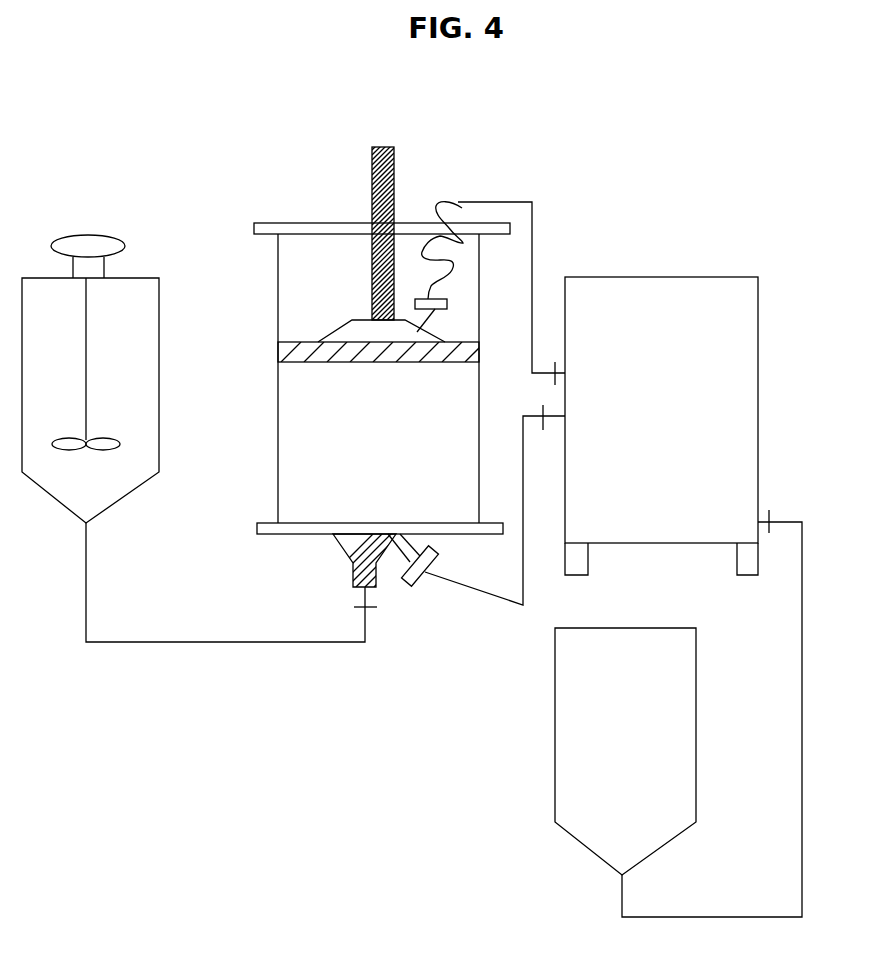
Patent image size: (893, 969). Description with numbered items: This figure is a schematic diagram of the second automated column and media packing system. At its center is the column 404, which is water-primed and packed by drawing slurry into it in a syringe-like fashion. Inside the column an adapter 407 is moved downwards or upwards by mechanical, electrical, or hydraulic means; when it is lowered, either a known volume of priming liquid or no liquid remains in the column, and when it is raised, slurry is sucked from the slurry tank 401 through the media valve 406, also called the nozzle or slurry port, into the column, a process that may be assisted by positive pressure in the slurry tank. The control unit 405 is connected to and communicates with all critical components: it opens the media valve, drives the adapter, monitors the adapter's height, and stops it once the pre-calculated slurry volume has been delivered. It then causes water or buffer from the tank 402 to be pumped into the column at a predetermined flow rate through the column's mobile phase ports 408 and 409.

The slurry tank 401 is at (90, 379).
The tank 402 is at (625, 751).
The column 404 is at (382, 331).
The control unit 405 is at (661, 426).
The media valve 406 is at (373, 537).
The adapter 407 is at (292, 350).
The mobile phase port 408 is at (443, 300).
The mobile phase port 409 is at (417, 577).